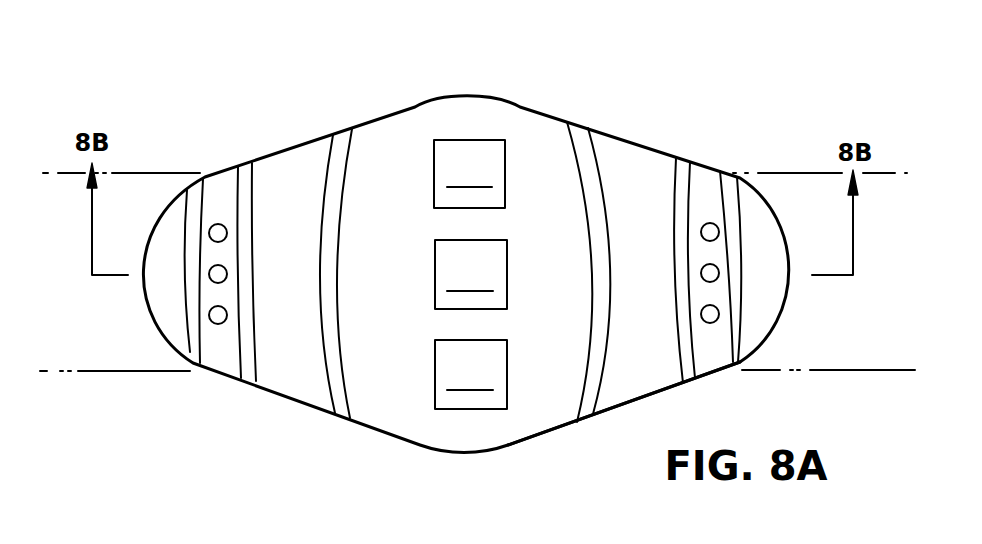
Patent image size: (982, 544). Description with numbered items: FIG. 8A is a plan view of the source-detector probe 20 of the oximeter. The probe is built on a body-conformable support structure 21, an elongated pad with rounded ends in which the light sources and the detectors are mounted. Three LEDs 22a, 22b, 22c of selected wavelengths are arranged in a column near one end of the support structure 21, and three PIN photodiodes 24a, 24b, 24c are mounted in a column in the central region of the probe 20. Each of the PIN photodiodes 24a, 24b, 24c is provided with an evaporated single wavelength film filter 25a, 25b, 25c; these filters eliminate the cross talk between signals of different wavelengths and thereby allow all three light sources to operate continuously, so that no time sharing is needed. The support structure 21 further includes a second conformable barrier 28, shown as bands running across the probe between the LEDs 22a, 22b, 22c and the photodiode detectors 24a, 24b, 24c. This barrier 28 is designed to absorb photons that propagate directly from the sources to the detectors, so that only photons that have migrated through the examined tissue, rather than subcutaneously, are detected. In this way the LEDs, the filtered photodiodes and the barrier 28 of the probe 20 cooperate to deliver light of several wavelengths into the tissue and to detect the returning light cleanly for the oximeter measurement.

The source-detector probe 20 is at (238, 94).
The body-conformable support structure 21 is at (628, 406).
The LED 22a is at (218, 224).
The LED 22b is at (209, 274).
The LED 22c is at (209, 315).
The PIN photodiode 24a is at (505, 186).
The PIN photodiode 24b is at (507, 272).
The PIN photodiode 24c is at (507, 357).
The single wavelength film filter 25a is at (468, 171).
The single wavelength film filter 25b is at (470, 275).
The single wavelength film filter 25c is at (470, 374).
The second conformable barrier 28 is at (247, 362).